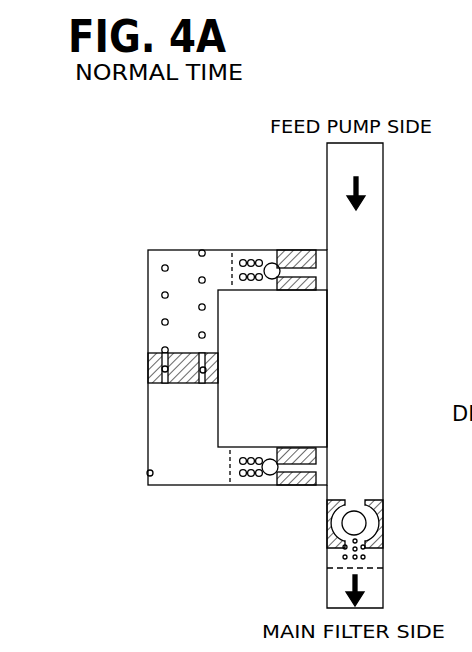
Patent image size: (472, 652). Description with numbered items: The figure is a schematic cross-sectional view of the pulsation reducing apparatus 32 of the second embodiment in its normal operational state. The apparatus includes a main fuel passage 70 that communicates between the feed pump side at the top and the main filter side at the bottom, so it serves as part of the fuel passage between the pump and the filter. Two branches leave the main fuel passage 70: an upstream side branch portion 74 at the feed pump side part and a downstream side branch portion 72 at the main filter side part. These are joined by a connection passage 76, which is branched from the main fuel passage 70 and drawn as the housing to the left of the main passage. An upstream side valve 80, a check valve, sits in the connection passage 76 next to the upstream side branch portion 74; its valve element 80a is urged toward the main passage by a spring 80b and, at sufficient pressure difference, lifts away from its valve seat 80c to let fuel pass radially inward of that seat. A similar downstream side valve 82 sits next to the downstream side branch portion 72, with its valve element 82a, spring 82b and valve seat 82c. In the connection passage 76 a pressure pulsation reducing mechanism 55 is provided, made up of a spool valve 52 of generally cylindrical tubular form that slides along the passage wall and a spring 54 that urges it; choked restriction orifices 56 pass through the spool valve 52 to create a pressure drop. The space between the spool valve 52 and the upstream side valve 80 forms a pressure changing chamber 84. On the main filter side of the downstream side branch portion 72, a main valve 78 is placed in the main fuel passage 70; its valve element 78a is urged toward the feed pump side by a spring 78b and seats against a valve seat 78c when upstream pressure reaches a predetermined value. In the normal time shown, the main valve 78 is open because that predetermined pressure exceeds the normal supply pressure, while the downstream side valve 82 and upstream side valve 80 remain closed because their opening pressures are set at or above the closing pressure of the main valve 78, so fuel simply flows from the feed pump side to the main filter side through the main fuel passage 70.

The pulsation reducing apparatus 32 is at (185, 163).
The pressure changing chamber 84 is at (185, 280).
The upstream side valve 80 is at (256, 268).
The valve element 80a is at (272, 279).
The spring 80b is at (250, 262).
The valve seat 80c is at (300, 291).
The upstream side branch portion 74 is at (315, 249).
The downstream side branch portion 72 is at (312, 447).
The main fuel passage 70 is at (386, 331).
The connection passage 76 is at (147, 473).
The spring 54 is at (162, 322).
The pressure pulsation reducing mechanism 55 is at (95, 318).
The restriction orifices 56 is at (162, 369).
The spool valve 52 is at (180, 393).
The downstream side valve 82 is at (255, 475).
The valve element 82a is at (272, 475).
The spring 82b is at (249, 457).
The valve seat 82c is at (304, 510).
The main valve 78 is at (357, 524).
The valve element 78a is at (368, 530).
The spring 78b is at (362, 558).
The valve seat 78c is at (334, 538).